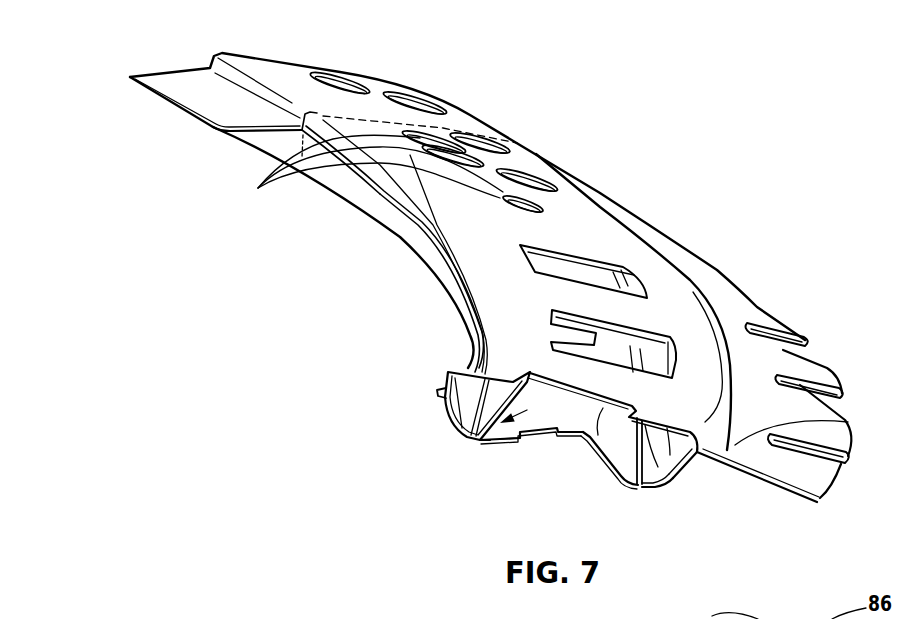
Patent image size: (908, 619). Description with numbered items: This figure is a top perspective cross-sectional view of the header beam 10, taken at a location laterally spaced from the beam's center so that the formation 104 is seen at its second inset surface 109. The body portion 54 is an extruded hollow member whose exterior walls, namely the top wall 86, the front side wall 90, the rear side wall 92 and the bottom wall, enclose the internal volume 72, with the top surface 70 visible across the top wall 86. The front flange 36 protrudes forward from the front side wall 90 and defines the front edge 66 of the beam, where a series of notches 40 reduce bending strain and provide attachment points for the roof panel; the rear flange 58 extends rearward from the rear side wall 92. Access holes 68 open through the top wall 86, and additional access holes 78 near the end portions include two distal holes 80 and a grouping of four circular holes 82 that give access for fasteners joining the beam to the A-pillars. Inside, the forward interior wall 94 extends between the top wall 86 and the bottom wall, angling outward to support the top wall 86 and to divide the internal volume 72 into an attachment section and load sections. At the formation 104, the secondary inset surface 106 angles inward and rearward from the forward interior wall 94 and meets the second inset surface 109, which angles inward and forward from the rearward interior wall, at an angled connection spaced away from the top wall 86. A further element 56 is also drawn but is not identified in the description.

The header beam 10 is at (621, 128).
The front flange 36 is at (852, 426).
The notches 40 is at (812, 349).
The body portion 54 is at (513, 323).
The channel bottom 56 is at (636, 487).
The rear flange 58 is at (380, 194).
The front edge 66 is at (757, 307).
The access holes 68 is at (617, 337).
The top surface 70 is at (573, 210).
The internal volume 72 is at (484, 441).
The additional access holes 78 is at (262, 184).
The distal holes 80 is at (417, 102).
The circular holes 82 is at (443, 130).
The top wall 86 is at (478, 375).
The front side wall 90 is at (678, 466).
The rear side wall 92 is at (445, 403).
The forward interior wall 94 is at (655, 422).
The formation 104 is at (562, 455).
The secondary inset surface 106 is at (598, 462).
The second inset surface 109 is at (505, 441).